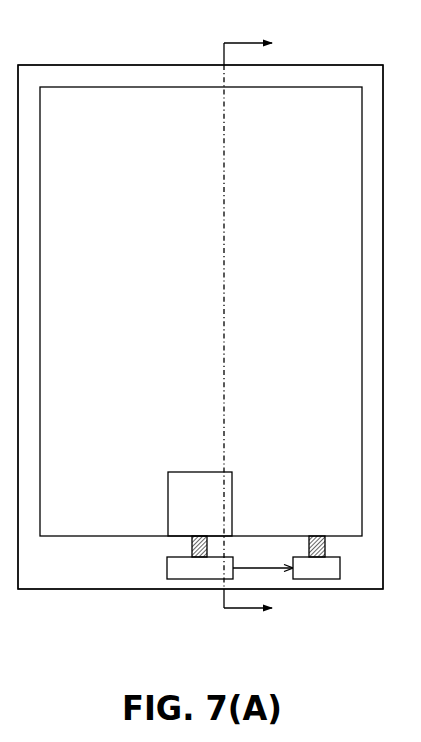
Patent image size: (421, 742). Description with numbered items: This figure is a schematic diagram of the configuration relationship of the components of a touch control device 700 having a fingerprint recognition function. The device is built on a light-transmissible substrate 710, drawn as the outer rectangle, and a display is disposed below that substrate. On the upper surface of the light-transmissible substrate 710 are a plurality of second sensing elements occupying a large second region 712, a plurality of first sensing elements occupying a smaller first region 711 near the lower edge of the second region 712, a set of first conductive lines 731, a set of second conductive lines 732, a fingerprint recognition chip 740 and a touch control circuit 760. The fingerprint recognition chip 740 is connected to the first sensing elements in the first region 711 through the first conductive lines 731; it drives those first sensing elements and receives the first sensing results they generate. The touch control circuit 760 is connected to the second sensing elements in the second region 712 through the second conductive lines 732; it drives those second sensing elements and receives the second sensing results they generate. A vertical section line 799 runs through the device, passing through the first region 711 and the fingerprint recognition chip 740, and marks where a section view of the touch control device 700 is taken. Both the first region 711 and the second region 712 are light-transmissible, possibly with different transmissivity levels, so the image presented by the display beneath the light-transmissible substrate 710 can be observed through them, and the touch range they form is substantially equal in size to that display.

The touch control device 700 is at (55, 31).
The light-transmissible substrate 710 is at (363, 65).
The second region 712 is at (213, 319).
The first region 711 is at (213, 512).
The first conductive lines 731 is at (190, 548).
The second conductive lines 732 is at (307, 548).
The fingerprint recognition chip 740 is at (213, 576).
The touch control circuit 760 is at (329, 576).
The section line 799 is at (240, 42).